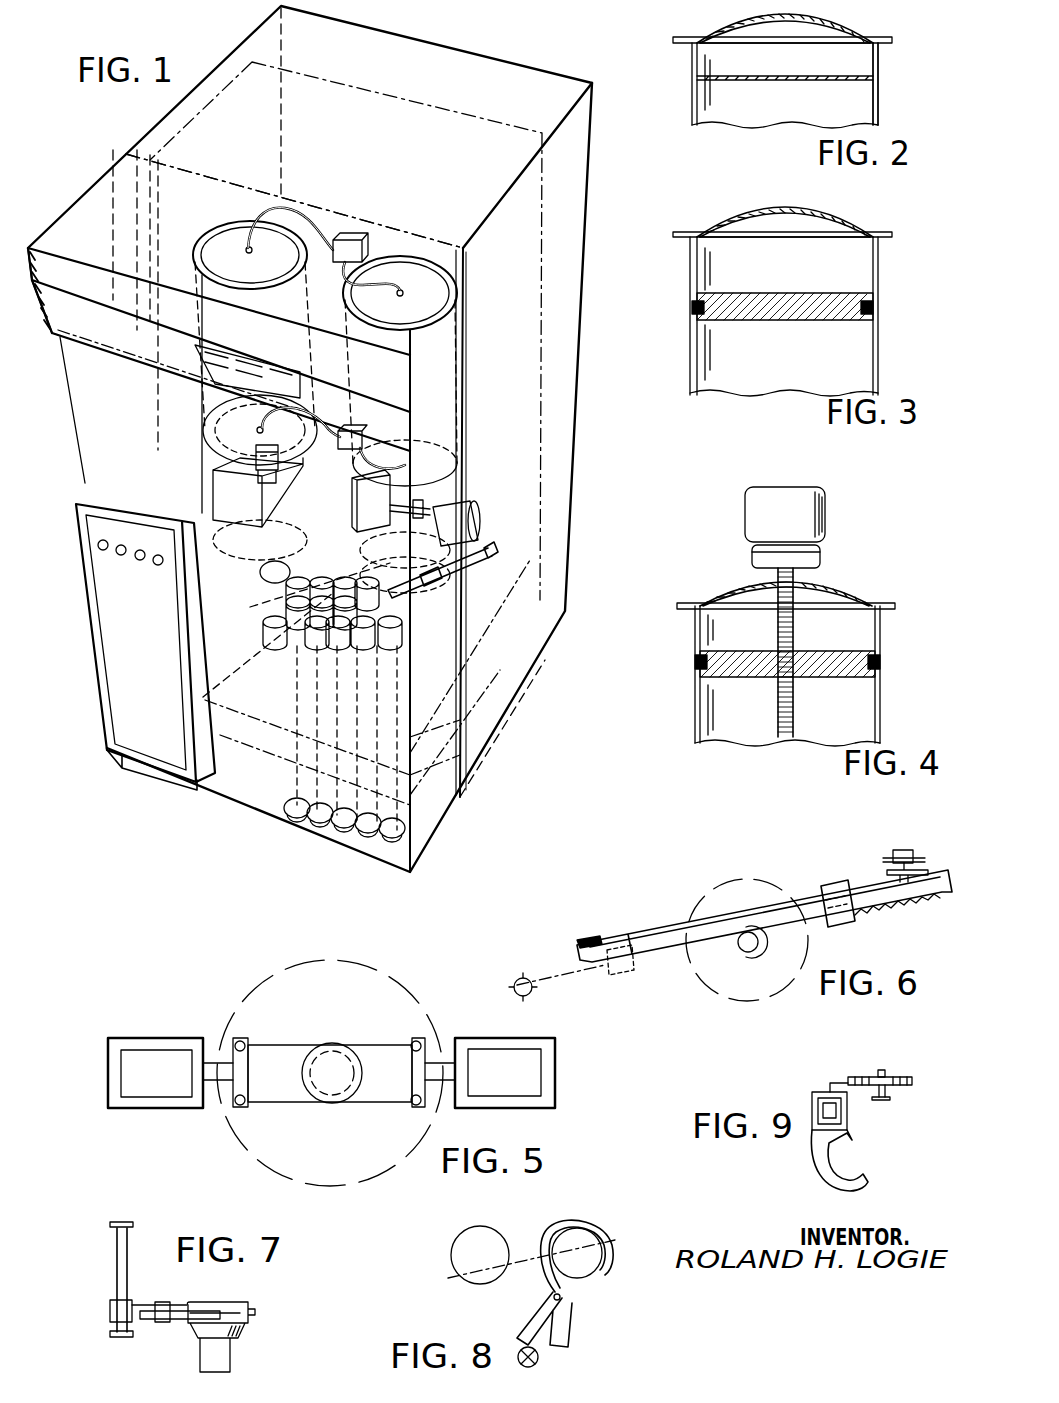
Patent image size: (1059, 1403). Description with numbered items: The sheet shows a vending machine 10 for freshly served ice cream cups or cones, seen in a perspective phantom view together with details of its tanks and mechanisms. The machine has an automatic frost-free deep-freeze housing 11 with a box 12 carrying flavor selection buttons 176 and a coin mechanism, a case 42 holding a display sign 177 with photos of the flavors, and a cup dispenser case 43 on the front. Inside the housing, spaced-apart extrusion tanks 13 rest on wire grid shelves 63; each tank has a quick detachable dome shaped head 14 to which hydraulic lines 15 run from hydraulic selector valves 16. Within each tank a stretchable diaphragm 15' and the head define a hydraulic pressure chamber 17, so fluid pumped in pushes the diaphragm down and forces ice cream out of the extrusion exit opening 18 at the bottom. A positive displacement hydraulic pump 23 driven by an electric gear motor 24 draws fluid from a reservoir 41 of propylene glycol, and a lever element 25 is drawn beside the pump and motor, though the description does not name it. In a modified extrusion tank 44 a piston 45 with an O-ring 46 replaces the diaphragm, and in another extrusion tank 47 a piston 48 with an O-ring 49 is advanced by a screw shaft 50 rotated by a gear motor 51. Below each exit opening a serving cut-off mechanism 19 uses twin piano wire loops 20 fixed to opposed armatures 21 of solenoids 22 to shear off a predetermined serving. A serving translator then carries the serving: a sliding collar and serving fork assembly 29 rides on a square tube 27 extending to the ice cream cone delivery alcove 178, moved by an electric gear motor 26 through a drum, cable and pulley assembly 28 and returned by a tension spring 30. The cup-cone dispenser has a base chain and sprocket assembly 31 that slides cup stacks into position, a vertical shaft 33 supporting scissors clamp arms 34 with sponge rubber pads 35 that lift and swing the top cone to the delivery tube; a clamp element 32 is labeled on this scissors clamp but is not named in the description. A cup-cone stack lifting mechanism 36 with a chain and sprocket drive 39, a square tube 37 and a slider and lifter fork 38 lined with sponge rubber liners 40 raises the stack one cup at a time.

In FIG. 1, the vending machine 10 is at (604, 238).
In FIG. 1, the deep-freeze housing 11 is at (531, 68).
In FIG. 1, the box 12 is at (105, 737).
In FIG. 1, the extrusion tank 13 is at (215, 212).
In FIG. 2, the extrusion tank 13 is at (889, 66).
In FIG. 5, the extrusion tank 13 is at (405, 972).
In FIG. 2, the dome shaped head 14 is at (852, 20).
In FIG. 1, the hydraulic lines 15 is at (326, 321).
In FIG. 2, the diaphragm 15' is at (785, 96).
In FIG. 1, the hydraulic selector valves 16 is at (353, 234).
In FIG. 2, the hydraulic pressure chamber 17 is at (876, 88).
In FIG. 1, the extrusion exit opening 18 is at (446, 404).
In FIG. 1, the serving cut-off mechanism 19 is at (200, 343).
In FIG. 5, the serving cut-off mechanism 19 is at (213, 990).
In FIG. 5, the piano wire loops 20 is at (279, 1115).
In FIG. 5, the armatures 21 is at (404, 1052).
In FIG. 5, the solenoids 22 is at (482, 1040).
In FIG. 1, the hydraulic pump 23 is at (393, 490).
In FIG. 1, the electric gear motor 24 is at (479, 527).
In FIG. 1, the lever arm 25 is at (483, 578).
In FIG. 6, the electric gear motor 26 is at (896, 850).
In FIG. 6, the square tube 27 is at (578, 952).
In FIG. 6, the drum, cable and pulley assembly 28 is at (592, 942).
In FIG. 6, the sliding collar and serving fork assembly 29 is at (840, 928).
In FIG. 6, the tension spring 30 is at (882, 908).
In FIG. 1, the chain and sprocket assembly 31 is at (418, 810).
In FIG. 8, the clamp 32 is at (500, 1335).
In FIG. 7, the vertical shaft 33 is at (117, 1275).
In FIG. 8, the vertical shaft 33 is at (540, 1363).
In FIG. 8, the scissors clamp arms 34 is at (528, 1300).
In FIG. 8, the sponge rubber pads 35 is at (578, 1230).
In FIG. 9, the cup-cone stack lifting mechanism 36 is at (800, 1092).
In FIG. 9, the square tube 37 is at (815, 1125).
In FIG. 9, the slider and lifter fork 38 is at (815, 1150).
In FIG. 9, the chain and sprocket drive 39 is at (900, 1077).
In FIG. 9, the sponge rubber liners 40 is at (840, 1176).
In FIG. 1, the reservoir 41 is at (510, 667).
In FIG. 1, the case 42 is at (28, 248).
In FIG. 1, the cup dispenser case 43 is at (135, 167).
In FIG. 3, the extrusion tank 44 is at (886, 288).
In FIG. 3, the piston 45 is at (820, 312).
In FIG. 3, the O-ring 46 is at (876, 306).
In FIG. 4, the extrusion tank 47 is at (893, 658).
In FIG. 4, the piston 48 is at (835, 672).
In FIG. 4, the O-ring 49 is at (880, 662).
In FIG. 4, the screw shaft 50 is at (795, 726).
In FIG. 4, the gear motor 51 is at (822, 560).
In FIG. 1, the wire grid shelves 63 is at (480, 331).
In FIG. 1, the flavor selection buttons 176 is at (96, 556).
In FIG. 1, the display sign 177 is at (100, 323).
In FIG. 1, the ice cream cone delivery alcove 178 is at (222, 498).